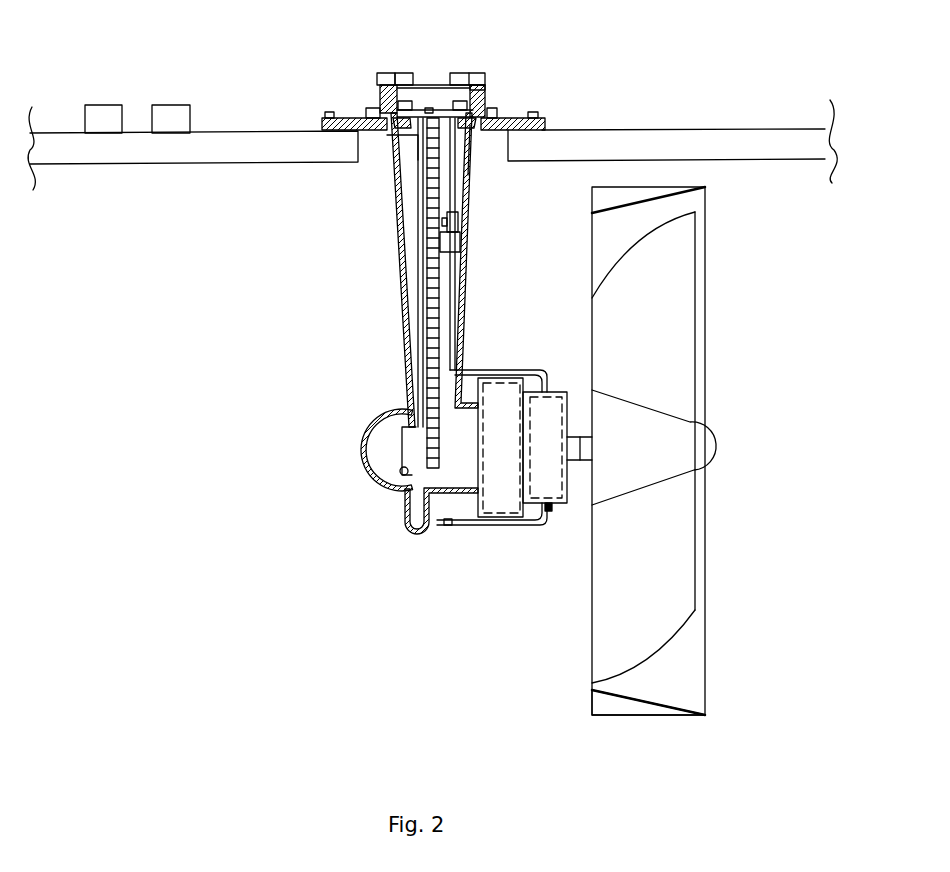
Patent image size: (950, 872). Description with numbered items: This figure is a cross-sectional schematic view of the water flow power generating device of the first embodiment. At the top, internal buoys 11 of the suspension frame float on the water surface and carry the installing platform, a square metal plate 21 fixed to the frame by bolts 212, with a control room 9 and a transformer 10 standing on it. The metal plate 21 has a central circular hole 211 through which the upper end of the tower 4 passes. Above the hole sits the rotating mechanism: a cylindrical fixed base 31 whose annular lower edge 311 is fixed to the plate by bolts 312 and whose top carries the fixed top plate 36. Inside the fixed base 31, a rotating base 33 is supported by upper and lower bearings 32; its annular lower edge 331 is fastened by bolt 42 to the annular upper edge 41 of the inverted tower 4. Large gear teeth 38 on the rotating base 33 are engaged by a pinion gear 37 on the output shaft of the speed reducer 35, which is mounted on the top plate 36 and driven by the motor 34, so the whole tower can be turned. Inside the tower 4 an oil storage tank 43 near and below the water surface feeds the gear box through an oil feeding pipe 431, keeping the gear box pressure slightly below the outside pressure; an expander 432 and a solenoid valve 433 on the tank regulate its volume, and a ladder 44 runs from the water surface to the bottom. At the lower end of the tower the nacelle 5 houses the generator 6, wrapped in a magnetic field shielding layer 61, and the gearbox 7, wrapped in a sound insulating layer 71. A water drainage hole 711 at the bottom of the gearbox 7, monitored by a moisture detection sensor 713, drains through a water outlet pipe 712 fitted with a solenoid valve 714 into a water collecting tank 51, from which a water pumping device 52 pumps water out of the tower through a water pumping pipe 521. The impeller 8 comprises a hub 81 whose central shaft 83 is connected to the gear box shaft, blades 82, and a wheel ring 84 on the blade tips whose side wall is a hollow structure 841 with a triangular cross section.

The tower 4 is at (396, 186).
The nacelle 5 is at (376, 440).
The generator 6 is at (512, 410).
The gearbox 7 is at (540, 432).
The impeller 8 is at (729, 606).
The control room 9 is at (98, 125).
The transformer 10 is at (173, 124).
The internal buoys 11 is at (292, 146).
The square metal plate 21 is at (335, 118).
The fixed base 31 is at (385, 100).
The bearings 32 is at (477, 135).
The rotating base 33 is at (385, 80).
The motor 34 is at (404, 80).
The speed reducer 35 is at (478, 82).
The fixed top plate 36 is at (416, 88).
The pinion gear 37 is at (484, 96).
The large gear teeth 38 is at (484, 88).
The annular upper edge 41 is at (404, 117).
The bolt 42 is at (398, 120).
The oil storage tank 43 is at (458, 243).
The ladder 44 is at (432, 244).
The water collecting tank 51 is at (414, 506).
The water pumping device 52 is at (400, 474).
The magnetic field shielding layer 61 is at (490, 385).
The sound insulating layer 71 is at (567, 393).
The hub 81 is at (612, 407).
The blades 82 is at (650, 280).
The central shaft 83 is at (582, 450).
The wheel ring 84 is at (686, 704).
The circular hole 211 is at (370, 133).
The bolts 212 is at (325, 116).
The annular lower edge 311 is at (540, 125).
The bolts 312 is at (497, 112).
The annular lower edge 331 is at (378, 109).
The oil feeding pipe 431 is at (455, 278).
The expander 432 is at (458, 220).
The solenoid valve 433 is at (451, 220).
The water pumping pipe 521 is at (419, 306).
The water drainage hole 711 is at (612, 478).
The water outlet pipe 712 is at (494, 525).
The moisture detection sensor 713 is at (553, 507).
The solenoid valve 714 is at (448, 526).
The hollow structure 841 is at (618, 705).